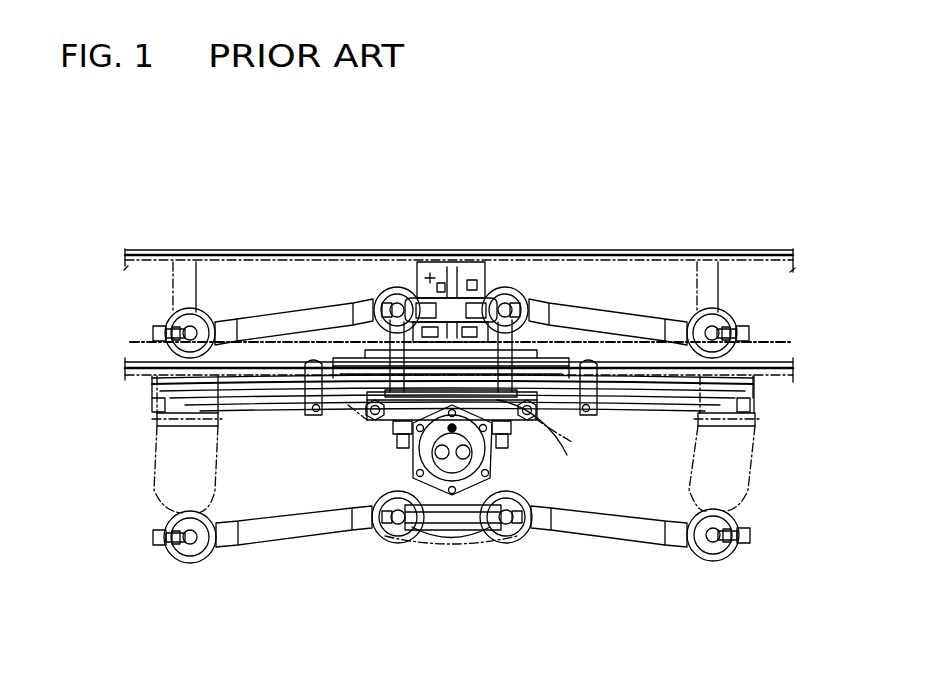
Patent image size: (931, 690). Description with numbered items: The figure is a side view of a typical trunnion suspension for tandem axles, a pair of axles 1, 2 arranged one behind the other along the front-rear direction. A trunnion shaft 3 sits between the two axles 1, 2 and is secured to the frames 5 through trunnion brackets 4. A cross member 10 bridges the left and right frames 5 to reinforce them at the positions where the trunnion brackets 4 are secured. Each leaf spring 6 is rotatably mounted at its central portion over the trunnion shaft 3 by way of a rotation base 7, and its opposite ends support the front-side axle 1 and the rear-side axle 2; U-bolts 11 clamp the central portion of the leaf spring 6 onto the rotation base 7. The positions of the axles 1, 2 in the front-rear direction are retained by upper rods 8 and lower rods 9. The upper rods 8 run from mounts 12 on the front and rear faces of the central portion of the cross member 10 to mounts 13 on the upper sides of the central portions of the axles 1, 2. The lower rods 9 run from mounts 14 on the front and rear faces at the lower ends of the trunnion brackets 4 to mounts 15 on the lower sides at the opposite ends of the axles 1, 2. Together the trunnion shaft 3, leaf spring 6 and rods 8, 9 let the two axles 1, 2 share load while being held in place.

The axle 1 is at (180, 452).
The axle 2 is at (722, 481).
The trunnion shaft 3 is at (468, 463).
The trunnion bracket 4 is at (536, 419).
The frame 5 is at (217, 250).
The leaf spring 6 is at (648, 410).
The rotation base 7 is at (405, 400).
The upper rod 8 is at (258, 316).
The lower rod 9 is at (301, 530).
The cross member 10 is at (488, 264).
The U-bolt 11 is at (357, 324).
The mount 12 is at (410, 299).
The mount 13 is at (178, 318).
The mount 14 is at (392, 545).
The mount 15 is at (188, 560).